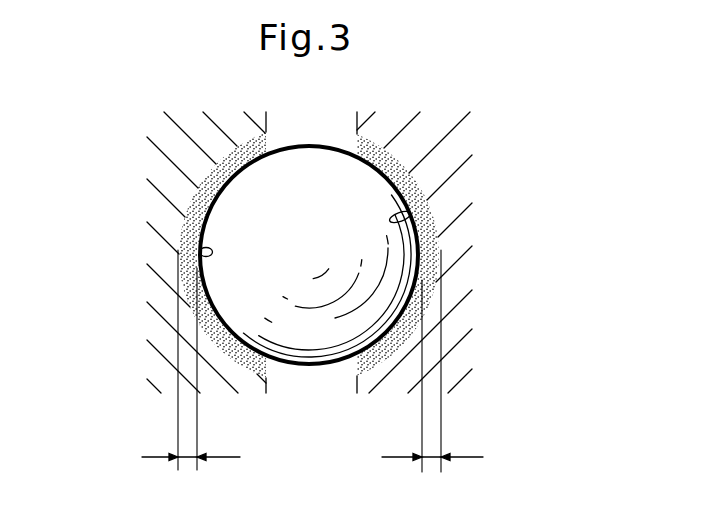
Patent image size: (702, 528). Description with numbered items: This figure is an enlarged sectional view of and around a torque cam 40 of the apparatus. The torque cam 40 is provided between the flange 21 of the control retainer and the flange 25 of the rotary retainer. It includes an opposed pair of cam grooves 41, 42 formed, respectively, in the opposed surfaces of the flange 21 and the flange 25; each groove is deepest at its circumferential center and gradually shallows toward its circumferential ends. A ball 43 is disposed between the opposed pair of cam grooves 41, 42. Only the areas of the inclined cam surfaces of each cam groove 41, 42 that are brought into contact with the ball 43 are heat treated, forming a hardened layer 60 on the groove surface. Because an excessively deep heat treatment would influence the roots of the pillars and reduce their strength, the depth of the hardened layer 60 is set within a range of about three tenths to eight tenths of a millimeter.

The flange of the control retainer 21 is at (458, 141).
The flange of the rotary retainer 25 is at (180, 146).
The torque cam 40 is at (185, 209).
The cam groove 41 is at (417, 213).
The cam groove 42 is at (200, 254).
The ball 43 is at (397, 265).
The hardened layer 60 is at (357, 371).